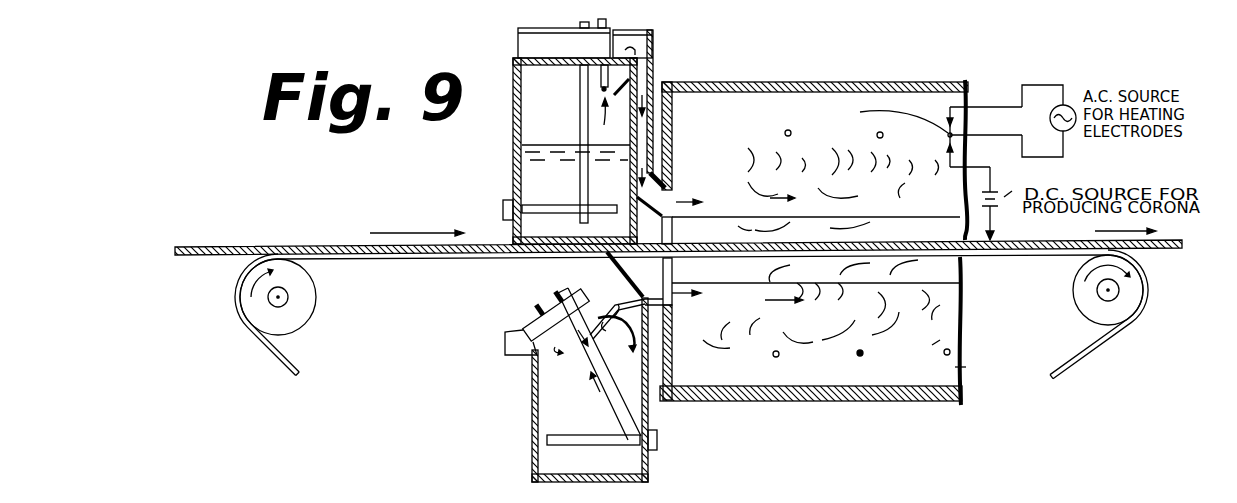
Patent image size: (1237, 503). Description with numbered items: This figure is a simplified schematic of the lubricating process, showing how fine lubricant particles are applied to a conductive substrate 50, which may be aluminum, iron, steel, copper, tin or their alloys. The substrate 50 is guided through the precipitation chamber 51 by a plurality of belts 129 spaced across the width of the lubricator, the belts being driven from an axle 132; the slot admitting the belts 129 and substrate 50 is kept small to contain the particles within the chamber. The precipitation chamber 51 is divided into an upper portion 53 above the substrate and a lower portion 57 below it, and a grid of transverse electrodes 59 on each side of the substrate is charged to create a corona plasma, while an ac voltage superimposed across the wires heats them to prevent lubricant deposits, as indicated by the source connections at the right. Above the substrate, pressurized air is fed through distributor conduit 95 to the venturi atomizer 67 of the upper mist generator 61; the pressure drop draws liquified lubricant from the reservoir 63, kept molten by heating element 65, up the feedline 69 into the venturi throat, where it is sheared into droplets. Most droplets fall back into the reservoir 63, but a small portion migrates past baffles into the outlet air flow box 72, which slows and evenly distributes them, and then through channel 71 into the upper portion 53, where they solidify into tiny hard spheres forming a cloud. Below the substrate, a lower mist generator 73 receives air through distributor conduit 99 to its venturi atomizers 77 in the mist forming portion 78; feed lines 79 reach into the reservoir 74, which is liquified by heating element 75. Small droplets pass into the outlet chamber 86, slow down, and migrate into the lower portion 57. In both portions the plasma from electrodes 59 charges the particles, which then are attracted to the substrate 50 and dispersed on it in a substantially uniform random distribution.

The conductive substrate 50 is at (268, 247).
The precipitation chamber 51 is at (862, 76).
The upper portion of precipitation chamber 53 is at (966, 81).
The lower portion of precipitation chamber 57 is at (845, 402).
The electrodes 59 is at (877, 132).
The upper mist generator 61 is at (500, 44).
The reservoir 63 is at (513, 155).
The heating element 65 is at (597, 183).
The venturi atomizer 67 is at (564, 44).
The feedline 69 is at (580, 116).
The channel 71 is at (663, 140).
The outlet air flow box 72 is at (625, 53).
The lower mist generator 73 is at (497, 334).
The reservoir 74 is at (530, 388).
The heating element 75 is at (558, 448).
The venturi atomizer 77 is at (537, 311).
The mist forming portion 78 is at (587, 303).
The feed lines 79 is at (607, 411).
The outlet chamber 86 is at (673, 273).
The distributor conduit 95 is at (606, 22).
The distributor conduit 99 is at (556, 290).
The belts 129 is at (283, 371).
The axle 132 is at (1115, 297).